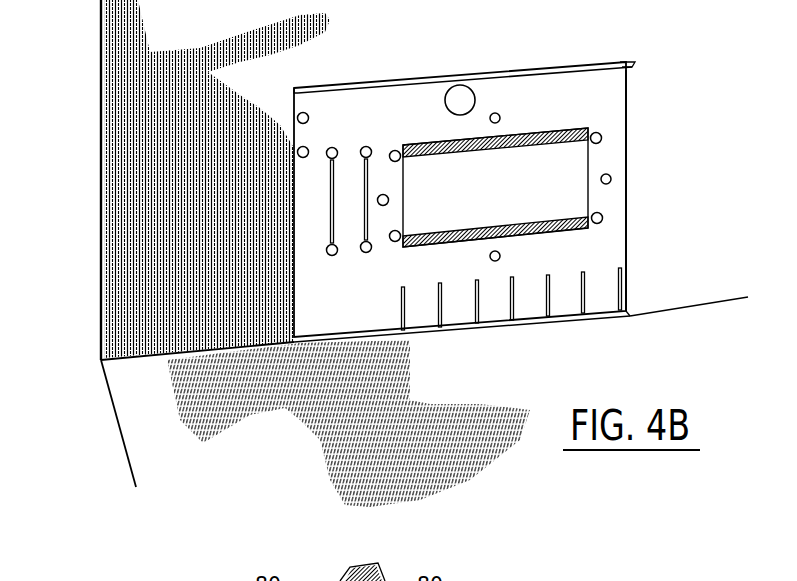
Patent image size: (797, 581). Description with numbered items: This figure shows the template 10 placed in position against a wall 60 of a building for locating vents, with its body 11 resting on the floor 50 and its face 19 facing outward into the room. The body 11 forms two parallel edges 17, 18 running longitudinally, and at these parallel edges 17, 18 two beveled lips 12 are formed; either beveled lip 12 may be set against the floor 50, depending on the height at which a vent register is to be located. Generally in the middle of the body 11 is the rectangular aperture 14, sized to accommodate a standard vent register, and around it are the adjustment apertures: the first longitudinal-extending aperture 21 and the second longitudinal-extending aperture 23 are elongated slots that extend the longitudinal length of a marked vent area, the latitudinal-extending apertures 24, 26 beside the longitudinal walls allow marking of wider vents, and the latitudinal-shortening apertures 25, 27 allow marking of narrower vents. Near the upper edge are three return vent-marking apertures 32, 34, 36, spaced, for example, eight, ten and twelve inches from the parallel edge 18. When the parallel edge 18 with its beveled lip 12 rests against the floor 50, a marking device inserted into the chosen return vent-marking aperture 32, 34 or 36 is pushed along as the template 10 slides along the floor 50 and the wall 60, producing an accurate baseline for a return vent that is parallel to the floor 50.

The template 10 is at (640, 70).
The body 11 is at (616, 115).
The beveled lips 12 is at (573, 72).
The rectangular aperture 14 is at (575, 167).
The parallel edge 17 is at (628, 60).
The parallel edge 18 is at (634, 307).
The face 19 is at (618, 242).
The first longitudinal-extending aperture 21 is at (384, 195).
The second longitudinal-extending aperture 23 is at (335, 200).
The latitudinal-extending aperture 24 is at (500, 116).
The latitudinal-shortening aperture 25 is at (389, 200).
The latitudinal-extending aperture 26 is at (500, 258).
The latitudinal-shortening aperture 27 is at (600, 185).
The return vent-marking aperture 32 is at (306, 200).
The return vent-marking aperture 34 is at (310, 150).
The return vent-marking aperture 36 is at (310, 118).
The floor 50 is at (140, 417).
The wall 60 is at (178, 2).